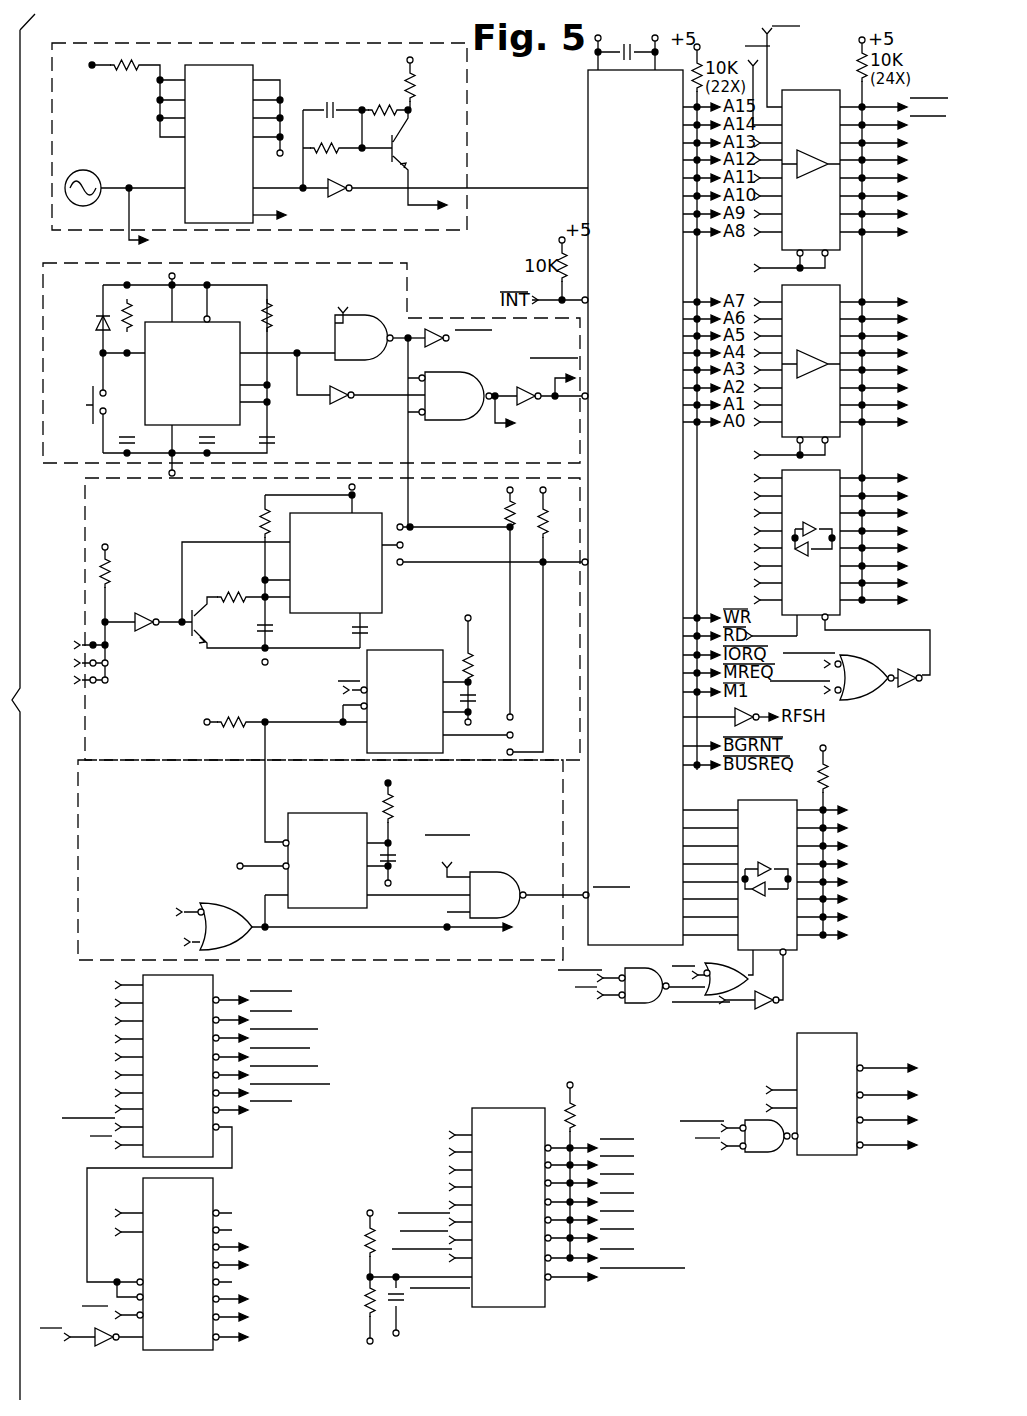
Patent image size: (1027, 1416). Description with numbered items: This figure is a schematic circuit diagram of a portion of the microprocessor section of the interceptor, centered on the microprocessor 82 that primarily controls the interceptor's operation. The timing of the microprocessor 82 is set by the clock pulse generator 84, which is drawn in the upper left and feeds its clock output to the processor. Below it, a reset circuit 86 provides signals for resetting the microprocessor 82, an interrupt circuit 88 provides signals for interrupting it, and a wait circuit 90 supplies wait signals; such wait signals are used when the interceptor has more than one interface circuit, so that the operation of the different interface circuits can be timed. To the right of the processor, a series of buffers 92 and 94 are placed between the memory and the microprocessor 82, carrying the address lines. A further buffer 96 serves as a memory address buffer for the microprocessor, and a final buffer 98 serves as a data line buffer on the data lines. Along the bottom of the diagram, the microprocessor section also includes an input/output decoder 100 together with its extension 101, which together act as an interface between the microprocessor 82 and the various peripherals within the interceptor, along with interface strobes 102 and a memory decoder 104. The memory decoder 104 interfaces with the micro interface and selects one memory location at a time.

The microprocessor 82 is at (620, 156).
The clock pulse generator 84 is at (108, 46).
The reset circuit 86 is at (106, 270).
The interrupt circuit 88 is at (84, 512).
The wait circuit 90 is at (80, 806).
The buffer 92 is at (812, 84).
The buffer 94 is at (842, 285).
The memory address buffer 96 is at (842, 470).
The data line buffer 98 is at (738, 802).
The I/O decoder 100 is at (213, 984).
The I/O decoder extension 101 is at (216, 1198).
The interface strobes 102 is at (797, 1046).
The memory decoder 104 is at (470, 1108).